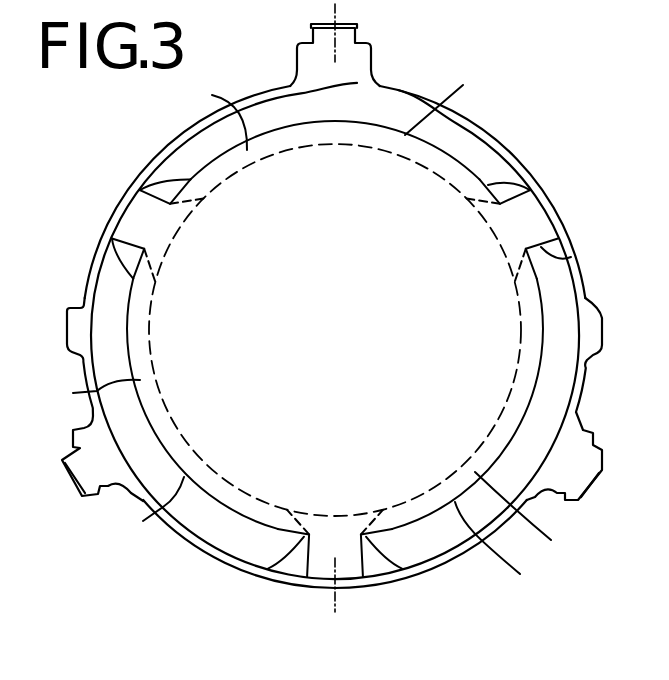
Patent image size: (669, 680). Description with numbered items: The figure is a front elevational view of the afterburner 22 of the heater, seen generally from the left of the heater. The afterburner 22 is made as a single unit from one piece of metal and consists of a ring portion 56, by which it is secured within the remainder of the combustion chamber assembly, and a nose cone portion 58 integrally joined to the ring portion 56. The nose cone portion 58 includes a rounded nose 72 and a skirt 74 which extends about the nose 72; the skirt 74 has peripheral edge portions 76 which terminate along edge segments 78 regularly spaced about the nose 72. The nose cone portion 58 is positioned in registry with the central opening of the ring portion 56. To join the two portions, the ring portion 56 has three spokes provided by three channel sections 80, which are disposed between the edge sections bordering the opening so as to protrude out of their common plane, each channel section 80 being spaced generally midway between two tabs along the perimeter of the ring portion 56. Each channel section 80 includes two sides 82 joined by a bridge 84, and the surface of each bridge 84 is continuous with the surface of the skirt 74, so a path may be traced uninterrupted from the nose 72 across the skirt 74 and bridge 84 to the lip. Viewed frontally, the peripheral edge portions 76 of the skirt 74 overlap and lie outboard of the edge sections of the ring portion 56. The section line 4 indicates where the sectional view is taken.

The section line 4- 4 is at (347, 13).
The afterburner 22 is at (397, 87).
The ring portion 56 is at (484, 150).
The nose cone portion 58 is at (392, 453).
The rounded nose 72 is at (361, 313).
The skirt 74 is at (494, 393).
The peripheral edge portions 76 is at (310, 317).
The edge segments 78 is at (330, 339).
The channel sections 80 is at (142, 210).
The sides 82 is at (163, 187).
The bridge 84 is at (131, 221).